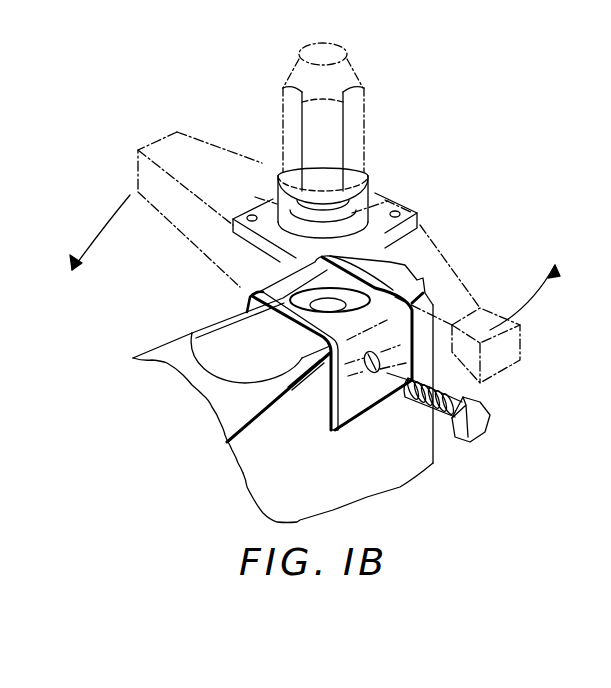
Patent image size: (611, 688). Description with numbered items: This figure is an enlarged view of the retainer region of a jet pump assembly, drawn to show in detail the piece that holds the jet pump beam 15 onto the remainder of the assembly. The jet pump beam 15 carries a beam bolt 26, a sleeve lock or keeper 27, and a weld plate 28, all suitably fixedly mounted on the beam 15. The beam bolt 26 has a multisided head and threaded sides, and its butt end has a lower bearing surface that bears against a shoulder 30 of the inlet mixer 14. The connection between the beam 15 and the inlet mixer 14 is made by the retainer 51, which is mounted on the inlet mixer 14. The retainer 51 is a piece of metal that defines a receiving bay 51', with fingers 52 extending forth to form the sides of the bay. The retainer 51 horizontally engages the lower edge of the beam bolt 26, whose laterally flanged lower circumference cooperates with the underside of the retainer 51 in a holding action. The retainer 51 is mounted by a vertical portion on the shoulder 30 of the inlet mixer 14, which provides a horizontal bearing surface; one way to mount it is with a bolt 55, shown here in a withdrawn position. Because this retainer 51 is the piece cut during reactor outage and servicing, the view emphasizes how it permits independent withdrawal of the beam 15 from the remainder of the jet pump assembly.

The inlet mixer 14 is at (240, 478).
The jet pump beam 15 is at (491, 248).
The beam bolt 26 is at (367, 107).
The sleeve lock or keeper 27 is at (372, 183).
The weld plate 28 is at (427, 217).
The shoulder 30 is at (227, 387).
The retainer 51 is at (340, 363).
The receiving bay 51' is at (260, 330).
The fingers 52 is at (252, 293).
The bolt 55 is at (490, 413).